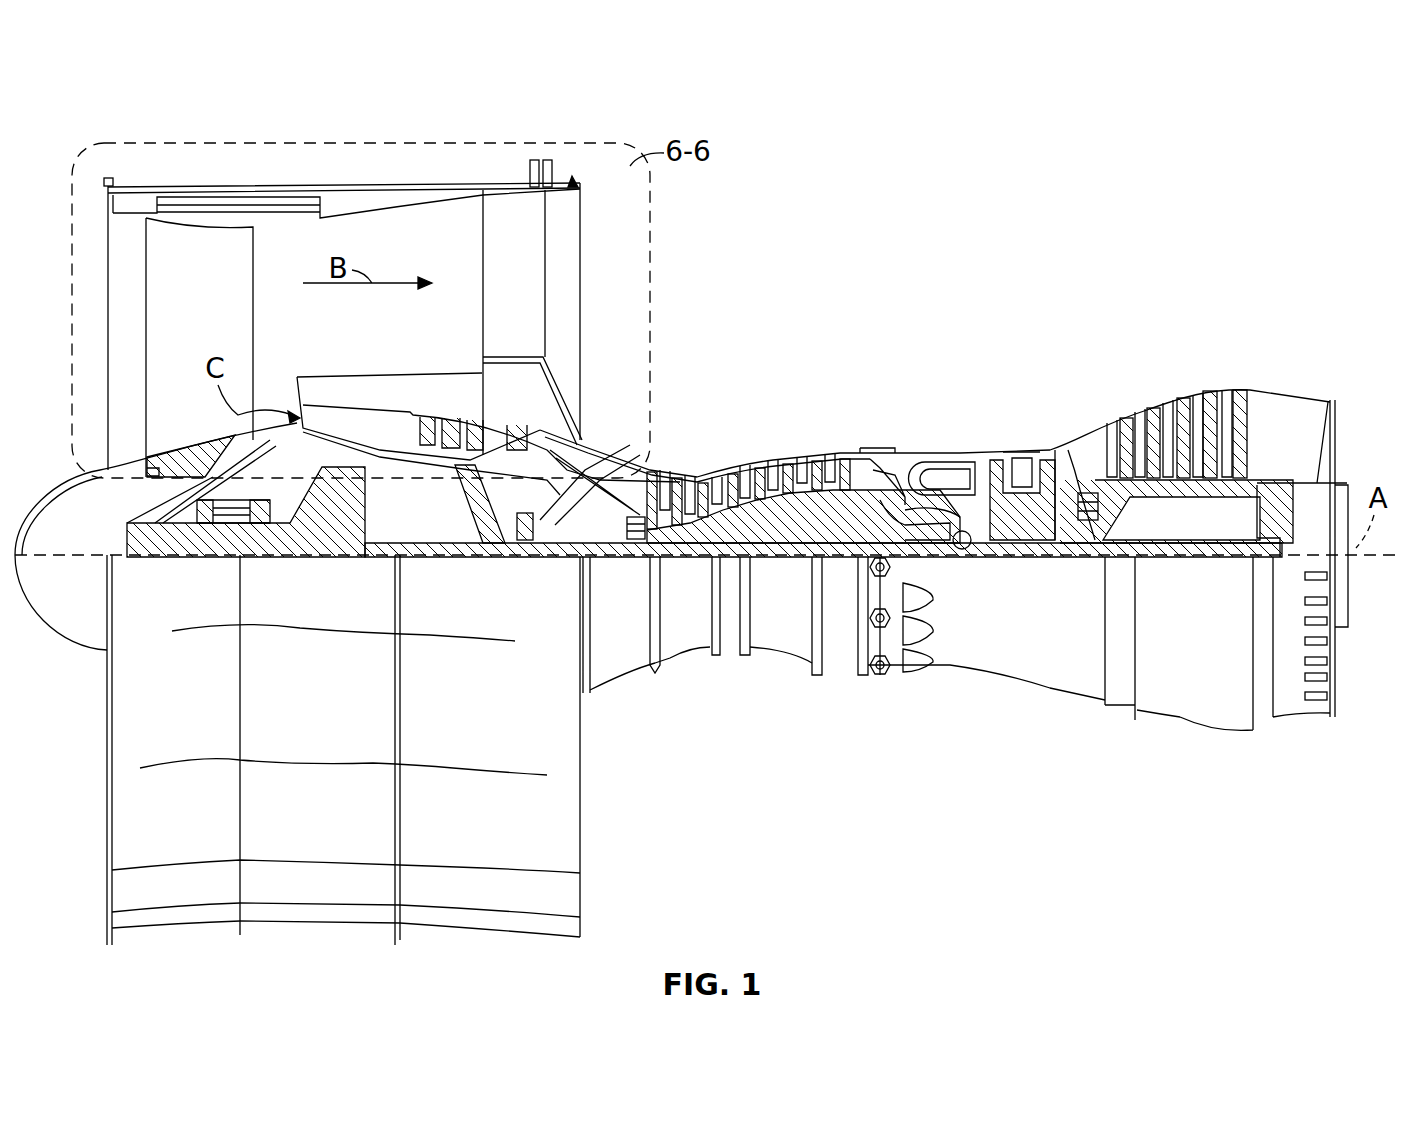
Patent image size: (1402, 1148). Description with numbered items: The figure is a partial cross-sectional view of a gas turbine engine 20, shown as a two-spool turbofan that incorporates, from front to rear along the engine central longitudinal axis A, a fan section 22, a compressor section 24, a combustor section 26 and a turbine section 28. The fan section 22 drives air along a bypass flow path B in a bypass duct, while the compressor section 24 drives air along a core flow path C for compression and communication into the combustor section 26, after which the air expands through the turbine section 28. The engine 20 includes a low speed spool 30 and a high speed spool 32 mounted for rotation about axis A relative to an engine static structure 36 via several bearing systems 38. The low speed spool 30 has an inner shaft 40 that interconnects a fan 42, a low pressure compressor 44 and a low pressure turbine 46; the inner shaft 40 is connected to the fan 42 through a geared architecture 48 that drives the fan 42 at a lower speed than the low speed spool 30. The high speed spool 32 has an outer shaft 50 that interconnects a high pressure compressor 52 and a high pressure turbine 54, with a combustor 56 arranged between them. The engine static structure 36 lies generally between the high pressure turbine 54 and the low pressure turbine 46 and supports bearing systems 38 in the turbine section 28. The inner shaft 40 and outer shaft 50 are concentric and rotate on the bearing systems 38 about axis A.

The gas turbine engine 20 is at (1153, 228).
The fan section 22 is at (232, 181).
The compressor section 24 is at (770, 413).
The combustor section 26 is at (941, 413).
The turbine section 28 is at (1082, 394).
The low speed spool 30 is at (803, 560).
The high speed spool 32 is at (852, 510).
The engine static structure 36 is at (845, 676).
The bearing systems 38 is at (207, 523).
The inner shaft 40 is at (593, 548).
The fan 42 is at (190, 311).
The low pressure compressor 44 is at (500, 435).
The low pressure turbine 46 is at (1186, 420).
The geared architecture 48 is at (345, 523).
The outer shaft 50 is at (970, 543).
The high pressure compressor 52 is at (760, 477).
The high pressure turbine 54 is at (1022, 453).
The combustor 56 is at (942, 472).